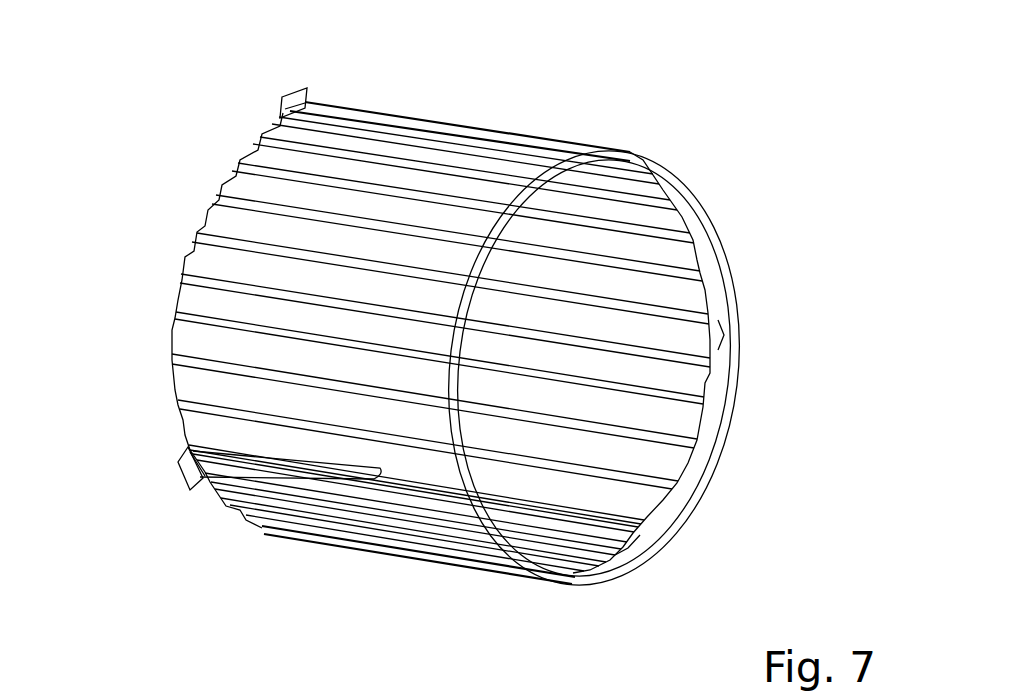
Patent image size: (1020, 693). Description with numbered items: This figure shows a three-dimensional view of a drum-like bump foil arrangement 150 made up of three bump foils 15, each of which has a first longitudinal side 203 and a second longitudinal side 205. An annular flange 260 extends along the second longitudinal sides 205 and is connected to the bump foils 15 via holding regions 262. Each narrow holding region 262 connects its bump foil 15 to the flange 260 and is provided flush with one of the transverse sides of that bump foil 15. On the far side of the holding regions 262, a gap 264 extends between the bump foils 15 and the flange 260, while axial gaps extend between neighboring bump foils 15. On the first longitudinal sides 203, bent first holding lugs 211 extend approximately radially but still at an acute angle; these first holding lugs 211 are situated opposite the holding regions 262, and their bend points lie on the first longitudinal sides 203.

The bump foil arrangement 150 is at (458, 326).
The bump foil 15 is at (205, 262).
The first longitudinal side 203 is at (215, 182).
The second longitudinal side 205 is at (703, 385).
The first holding lug 211 is at (292, 84).
The annular flange 260 is at (688, 500).
The holding region 262 is at (468, 508).
The gap 264 is at (712, 338).